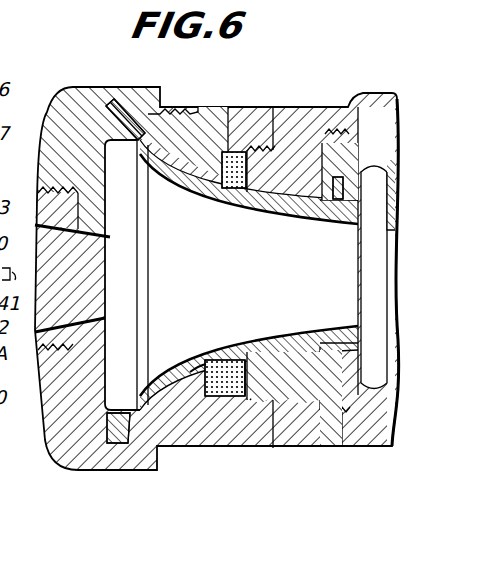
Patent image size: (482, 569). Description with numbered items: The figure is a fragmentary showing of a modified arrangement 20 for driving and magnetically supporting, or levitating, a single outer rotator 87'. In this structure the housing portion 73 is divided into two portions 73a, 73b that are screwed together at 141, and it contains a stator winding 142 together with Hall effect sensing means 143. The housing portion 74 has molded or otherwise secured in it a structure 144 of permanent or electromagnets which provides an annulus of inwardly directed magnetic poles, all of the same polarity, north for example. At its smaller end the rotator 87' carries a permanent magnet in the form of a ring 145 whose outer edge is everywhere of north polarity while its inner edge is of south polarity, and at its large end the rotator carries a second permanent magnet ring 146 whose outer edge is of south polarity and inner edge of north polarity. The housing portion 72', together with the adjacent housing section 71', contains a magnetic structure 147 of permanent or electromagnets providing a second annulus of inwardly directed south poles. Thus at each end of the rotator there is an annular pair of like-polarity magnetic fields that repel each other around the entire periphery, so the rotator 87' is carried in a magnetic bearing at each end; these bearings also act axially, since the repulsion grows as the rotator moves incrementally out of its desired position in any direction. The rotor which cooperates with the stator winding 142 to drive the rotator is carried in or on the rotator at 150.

The nozzle assembly 20 is at (2, 66).
The housing section 71' is at (57, 307).
The housing portion 72' is at (78, 283).
The housing portion 73 is at (296, 108).
The housing portion 73a is at (228, 453).
The housing portion 73b is at (308, 452).
The housing portion 74 is at (381, 93).
The outer rotator 87' is at (249, 197).
The screw connection 141 is at (281, 379).
The stator winding 142 is at (204, 396).
The Hall effect sensing means 143 is at (243, 397).
The magnet structure 144 is at (333, 134).
The permanent magnet ring 145 is at (345, 324).
The second permanent magnet ring 146 is at (142, 398).
The magnetic structure 147 is at (118, 445).
The rotor 150 is at (222, 356).